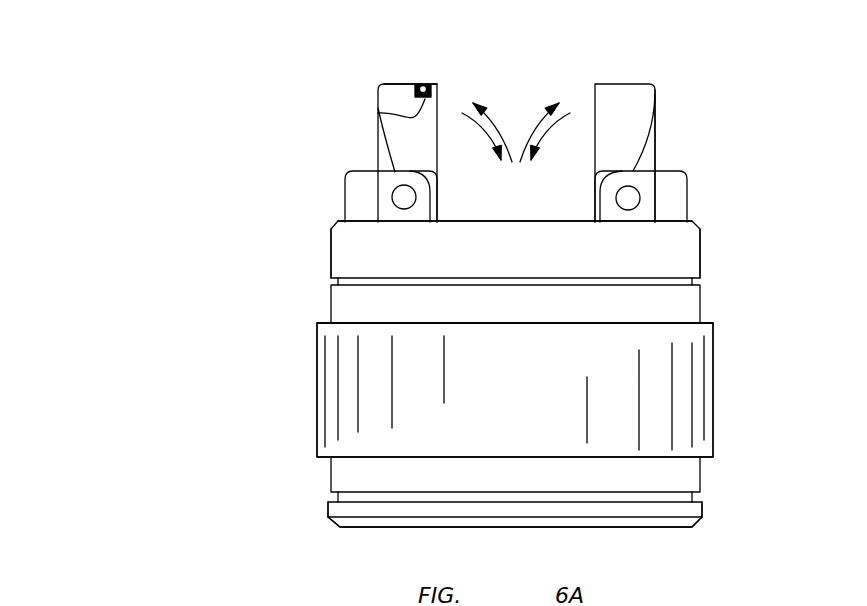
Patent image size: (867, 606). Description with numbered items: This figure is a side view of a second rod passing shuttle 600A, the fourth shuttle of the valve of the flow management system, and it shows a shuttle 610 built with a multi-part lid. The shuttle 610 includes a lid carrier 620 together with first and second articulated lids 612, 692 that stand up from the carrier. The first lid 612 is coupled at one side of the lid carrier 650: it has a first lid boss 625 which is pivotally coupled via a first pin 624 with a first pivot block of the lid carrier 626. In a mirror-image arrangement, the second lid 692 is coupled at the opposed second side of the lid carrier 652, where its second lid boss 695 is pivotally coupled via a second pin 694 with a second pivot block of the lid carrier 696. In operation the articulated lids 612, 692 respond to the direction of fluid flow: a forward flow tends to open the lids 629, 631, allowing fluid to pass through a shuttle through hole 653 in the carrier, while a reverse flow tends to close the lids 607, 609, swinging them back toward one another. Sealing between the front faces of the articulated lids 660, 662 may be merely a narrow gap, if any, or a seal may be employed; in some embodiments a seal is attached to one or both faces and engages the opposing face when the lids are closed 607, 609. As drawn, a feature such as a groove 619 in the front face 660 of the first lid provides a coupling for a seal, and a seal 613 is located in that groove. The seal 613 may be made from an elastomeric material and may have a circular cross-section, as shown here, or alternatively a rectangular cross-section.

The second rod passing shuttle 600A is at (227, 137).
The shuttle 610 is at (272, 330).
The first articulated lid 612 is at (372, 88).
The seal 613 is at (421, 84).
The groove 619 is at (378, 113).
The lid carrier 620 is at (310, 422).
The first pin 624 is at (392, 197).
The first lid boss 625 is at (378, 155).
The first pivot block of the lid carrier 626 is at (360, 184).
The lid opening under forward flow 629 is at (493, 124).
The lid opening under forward flow 631 is at (539, 124).
The lid closing under reverse flow 607 is at (486, 133).
The lid closing under reverse flow 609 is at (545, 133).
The one side of the lid carrier 650 is at (331, 245).
The opposed second side of the lid carrier 652 is at (700, 242).
The shuttle through hole 653 is at (357, 527).
The front face of the first articulated lid 660 is at (399, 84).
The front face of the second articulated lid 662 is at (620, 84).
The second articulated lid 692 is at (662, 90).
The second pin 694 is at (640, 197).
The second lid boss 695 is at (652, 155).
The second pivot block of the lid carrier 696 is at (670, 183).